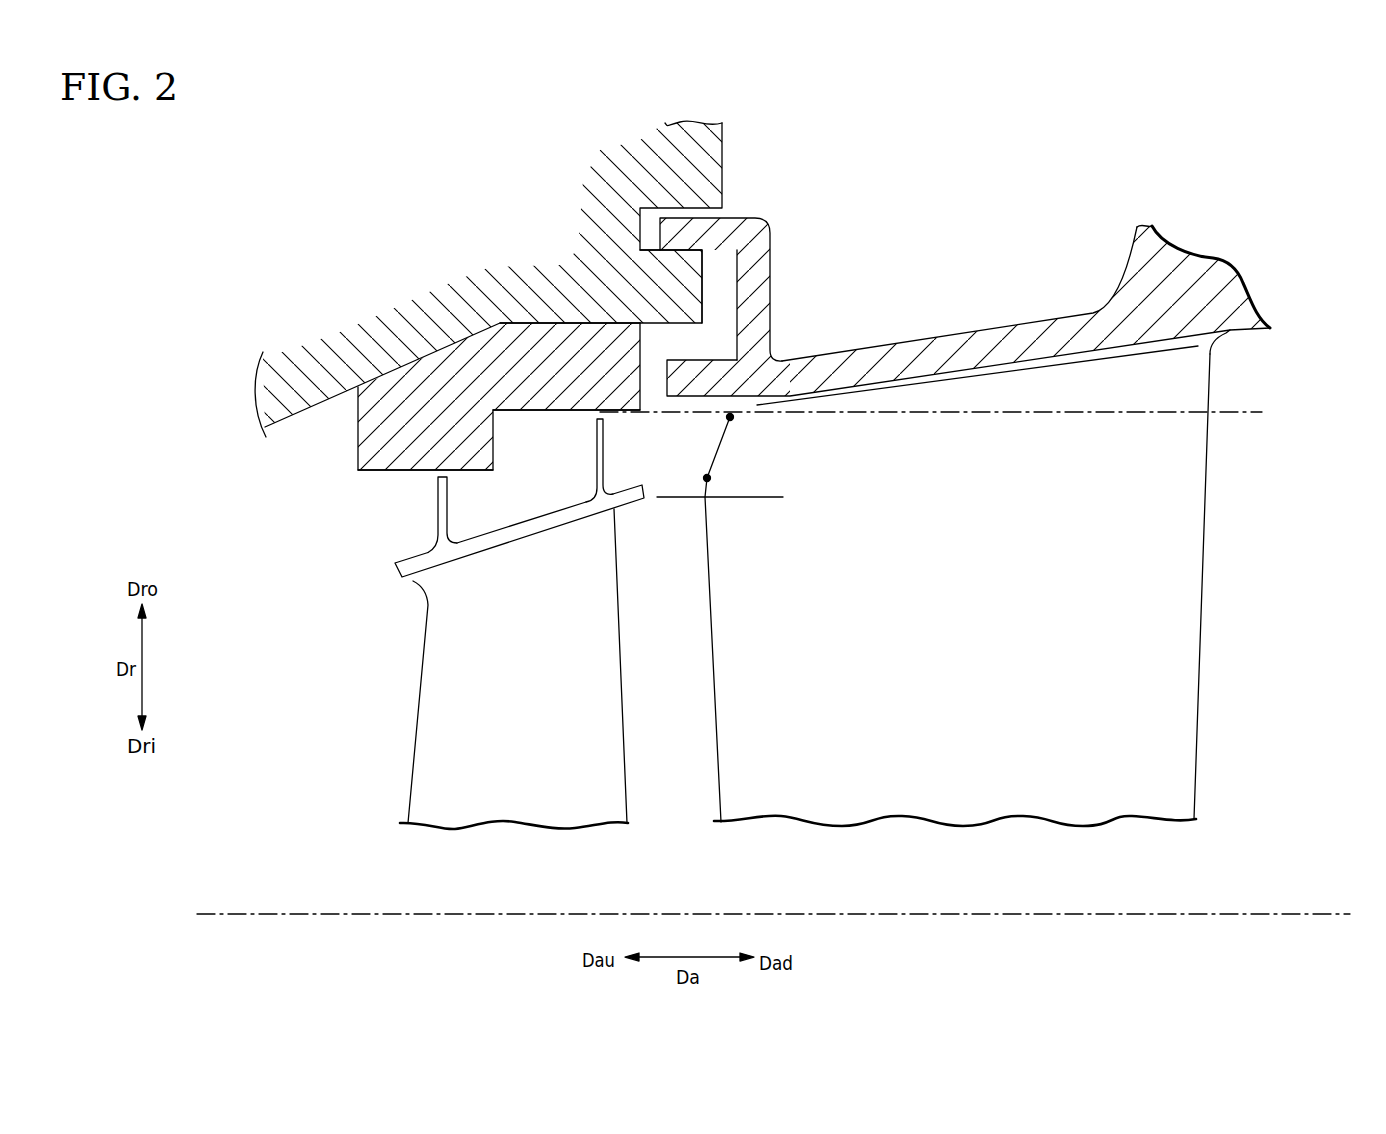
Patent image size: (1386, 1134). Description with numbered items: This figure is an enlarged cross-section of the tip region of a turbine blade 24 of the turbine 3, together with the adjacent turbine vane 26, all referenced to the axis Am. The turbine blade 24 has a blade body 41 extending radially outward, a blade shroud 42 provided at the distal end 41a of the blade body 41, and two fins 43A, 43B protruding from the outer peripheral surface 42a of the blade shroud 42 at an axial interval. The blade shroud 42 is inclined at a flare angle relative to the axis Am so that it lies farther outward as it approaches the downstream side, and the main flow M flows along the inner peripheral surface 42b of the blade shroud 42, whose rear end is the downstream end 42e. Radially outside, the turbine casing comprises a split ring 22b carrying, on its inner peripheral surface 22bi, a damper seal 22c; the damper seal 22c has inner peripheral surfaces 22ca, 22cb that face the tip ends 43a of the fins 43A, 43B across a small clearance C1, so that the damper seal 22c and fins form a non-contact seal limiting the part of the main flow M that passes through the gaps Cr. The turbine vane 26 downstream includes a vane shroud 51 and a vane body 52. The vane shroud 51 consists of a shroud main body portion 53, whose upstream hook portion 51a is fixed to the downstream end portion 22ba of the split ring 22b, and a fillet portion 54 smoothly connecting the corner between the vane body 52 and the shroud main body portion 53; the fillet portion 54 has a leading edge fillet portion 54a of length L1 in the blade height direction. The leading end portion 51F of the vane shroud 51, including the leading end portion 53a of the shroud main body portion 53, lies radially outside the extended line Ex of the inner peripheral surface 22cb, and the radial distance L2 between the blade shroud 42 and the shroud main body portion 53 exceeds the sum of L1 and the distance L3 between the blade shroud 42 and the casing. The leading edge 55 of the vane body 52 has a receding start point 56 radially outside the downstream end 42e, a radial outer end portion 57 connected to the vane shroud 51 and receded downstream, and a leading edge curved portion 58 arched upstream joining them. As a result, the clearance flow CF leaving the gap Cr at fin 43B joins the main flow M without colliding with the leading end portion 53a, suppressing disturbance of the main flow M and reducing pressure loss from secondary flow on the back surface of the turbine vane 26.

The turbine 3 is at (1110, 160).
The split ring 22b is at (420, 320).
The damper seal 22c is at (617, 323).
The inner peripheral surface of the split ring 22bi is at (528, 323).
The inner peripheral surface of the damper seal 22ca is at (407, 470).
The inner peripheral surface of the damper seal 22cb is at (543, 410).
The downstream end portion of the split ring 22ba is at (690, 282).
The hook portion 51a is at (722, 230).
The vane shroud 51 is at (1033, 340).
The shroud main body portion 53 is at (905, 345).
The leading end portion of the shroud main body portion 53a is at (672, 398).
The leading end portion of the vane shroud 51F is at (717, 397).
The fillet portion 54 is at (1210, 337).
The leading edge fillet portion 54a is at (740, 376).
The vane body 52 is at (1179, 496).
The leading edge 55 is at (713, 677).
The receding start point 56 is at (716, 455).
The radial outer end portion 57 is at (707, 478).
The leading edge curved portion 58 is at (730, 418).
The turbine vane 26 is at (1206, 653).
The turbine blade 24 is at (414, 707).
The blade body 41 is at (429, 750).
The distal end 41a is at (423, 545).
The blade shroud 42 is at (432, 409).
The outer peripheral surface of the blade shroud 42a is at (522, 522).
The inner peripheral surface of the blade shroud 42b is at (584, 519).
The downstream end of the inner peripheral surface 42e is at (644, 498).
The fin 43A is at (438, 508).
The fin 43B is at (597, 417).
The tip end 43a is at (441, 477).
The clearance C1 is at (628, 419).
The gap Cr is at (440, 474).
The clearance flow CF is at (677, 418).
The length of the leading edge fillet portion L1 is at (689, 445).
The distance between the blade shroud and the shroud main body portion L2 is at (744, 396).
The distance between the blade shroud and the turbine casing L3 is at (775, 412).
The main flow M is at (584, 672).
The extended line Ex is at (1229, 412).
The axis Am is at (256, 913).